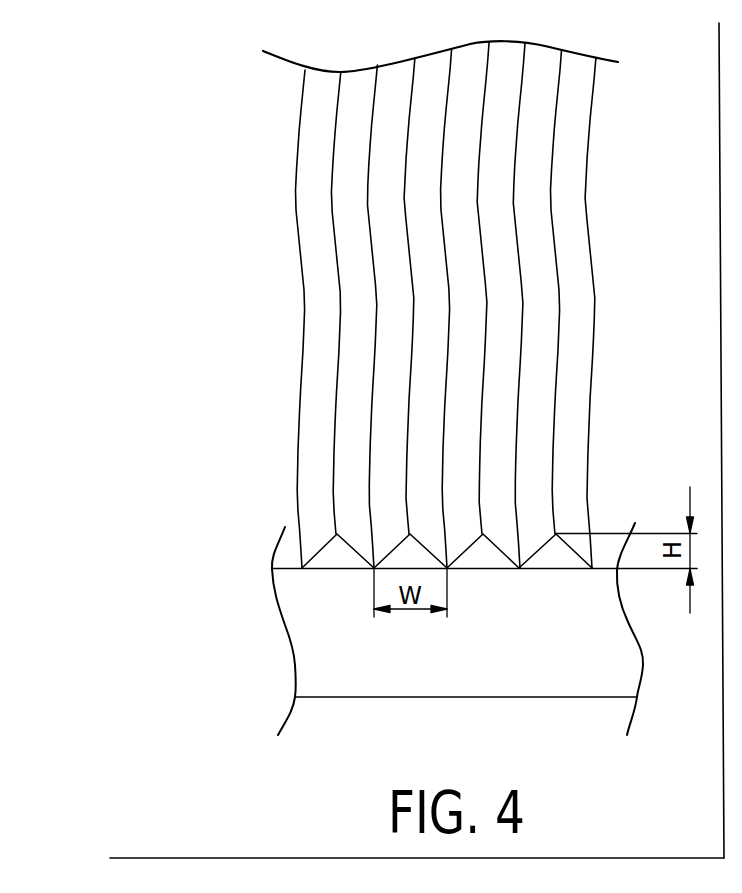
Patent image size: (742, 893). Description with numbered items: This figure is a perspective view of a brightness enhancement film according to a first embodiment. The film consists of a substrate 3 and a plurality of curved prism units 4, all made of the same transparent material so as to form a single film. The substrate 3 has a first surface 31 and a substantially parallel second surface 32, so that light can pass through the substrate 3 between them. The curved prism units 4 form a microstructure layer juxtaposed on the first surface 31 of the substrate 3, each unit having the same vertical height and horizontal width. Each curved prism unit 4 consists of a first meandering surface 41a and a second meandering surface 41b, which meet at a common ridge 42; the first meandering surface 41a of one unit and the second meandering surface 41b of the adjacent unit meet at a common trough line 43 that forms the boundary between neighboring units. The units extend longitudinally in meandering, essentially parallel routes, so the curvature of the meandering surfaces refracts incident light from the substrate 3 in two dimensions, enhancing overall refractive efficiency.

The substrate 3 is at (307, 648).
The first surface 31 is at (327, 569).
The second surface 32 is at (355, 697).
The curved prism unit 4 is at (328, 553).
The first meandering surface 41a is at (306, 458).
The second meandering surface 41b is at (348, 420).
The common ridge 42 is at (331, 223).
The common trough line 43 is at (372, 260).